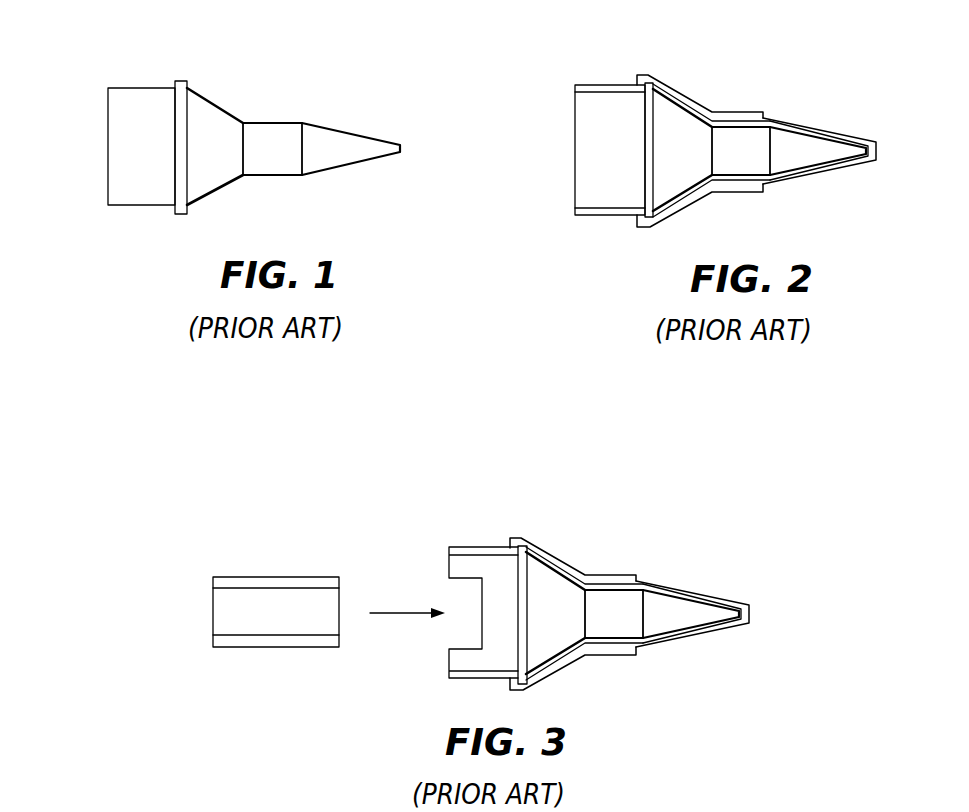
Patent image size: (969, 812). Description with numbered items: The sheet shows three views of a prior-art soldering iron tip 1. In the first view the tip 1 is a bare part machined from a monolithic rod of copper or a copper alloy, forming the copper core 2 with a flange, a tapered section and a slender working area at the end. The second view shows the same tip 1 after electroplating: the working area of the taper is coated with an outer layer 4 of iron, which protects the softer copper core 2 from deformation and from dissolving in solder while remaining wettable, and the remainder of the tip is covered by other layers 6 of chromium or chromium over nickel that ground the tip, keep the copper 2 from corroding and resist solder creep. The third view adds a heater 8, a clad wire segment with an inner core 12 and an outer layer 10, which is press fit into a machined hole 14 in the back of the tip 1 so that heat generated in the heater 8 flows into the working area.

In FIG. 1, the soldering iron tip 1 is at (87, 58).
In FIG. 2, the soldering iron tip 1 is at (558, 60).
In FIG. 3, the soldering iron tip 1 is at (451, 573).
In FIG. 1, the copper core 2 is at (208, 137).
In FIG. 2, the copper core 2 is at (677, 140).
In FIG. 3, the copper core 2 is at (584, 598).
In FIG. 2, the outer layer of iron 4 is at (820, 128).
In FIG. 3, the outer layer of iron 4 is at (692, 598).
In FIG. 2, the layers of other materials 6 is at (640, 74).
In FIG. 3, the layers of other materials 6 is at (576, 592).
In FIG. 3, the heater 8 is at (305, 569).
In FIG. 3, the outer layer 10 is at (290, 578).
In FIG. 3, the inner core 12 is at (328, 600).
In FIG. 3, the machined hole 14 is at (460, 628).